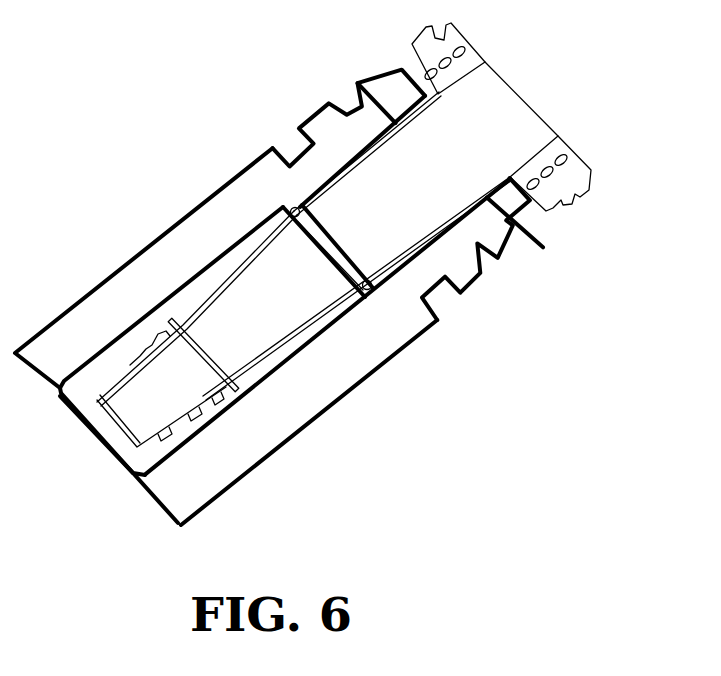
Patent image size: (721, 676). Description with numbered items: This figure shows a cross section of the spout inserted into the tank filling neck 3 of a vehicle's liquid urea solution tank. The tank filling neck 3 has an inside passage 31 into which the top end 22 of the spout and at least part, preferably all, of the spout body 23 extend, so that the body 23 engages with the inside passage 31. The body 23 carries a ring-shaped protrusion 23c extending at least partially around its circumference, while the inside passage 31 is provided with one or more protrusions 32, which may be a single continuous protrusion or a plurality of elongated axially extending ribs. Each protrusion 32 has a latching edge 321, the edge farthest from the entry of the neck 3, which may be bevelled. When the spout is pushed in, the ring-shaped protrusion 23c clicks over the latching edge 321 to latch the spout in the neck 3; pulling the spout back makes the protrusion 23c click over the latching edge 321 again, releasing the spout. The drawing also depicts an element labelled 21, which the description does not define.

The tank filling neck 3 is at (293, 284).
The inside passage 31 is at (143, 327).
The protrusion 32 is at (357, 84).
The latching edge 321 is at (287, 208).
The terminal module 21 is at (552, 142).
The top end 22 is at (137, 425).
The body 23 is at (297, 332).
The ring-shaped protrusion 23c is at (367, 288).